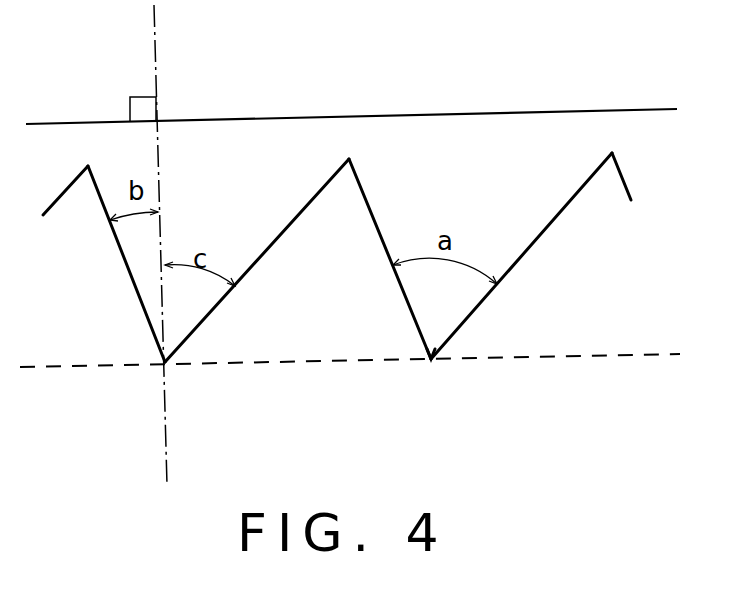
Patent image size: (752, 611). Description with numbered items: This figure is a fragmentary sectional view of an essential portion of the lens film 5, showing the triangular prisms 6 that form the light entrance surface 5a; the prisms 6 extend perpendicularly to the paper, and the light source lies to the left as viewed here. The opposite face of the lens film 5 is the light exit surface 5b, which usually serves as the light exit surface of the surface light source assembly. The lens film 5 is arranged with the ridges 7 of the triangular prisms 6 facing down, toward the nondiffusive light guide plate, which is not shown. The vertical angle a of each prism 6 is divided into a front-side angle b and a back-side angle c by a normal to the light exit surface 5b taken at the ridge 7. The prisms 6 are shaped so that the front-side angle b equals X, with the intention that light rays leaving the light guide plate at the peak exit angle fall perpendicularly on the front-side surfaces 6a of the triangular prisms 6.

The lens film 5 is at (350, 229).
The light entrance surface 5a is at (603, 357).
The light exit surface 5b is at (265, 118).
The triangular prism 6 is at (252, 245).
The front-side surface 6a is at (121, 255).
The ridge 7 is at (432, 362).